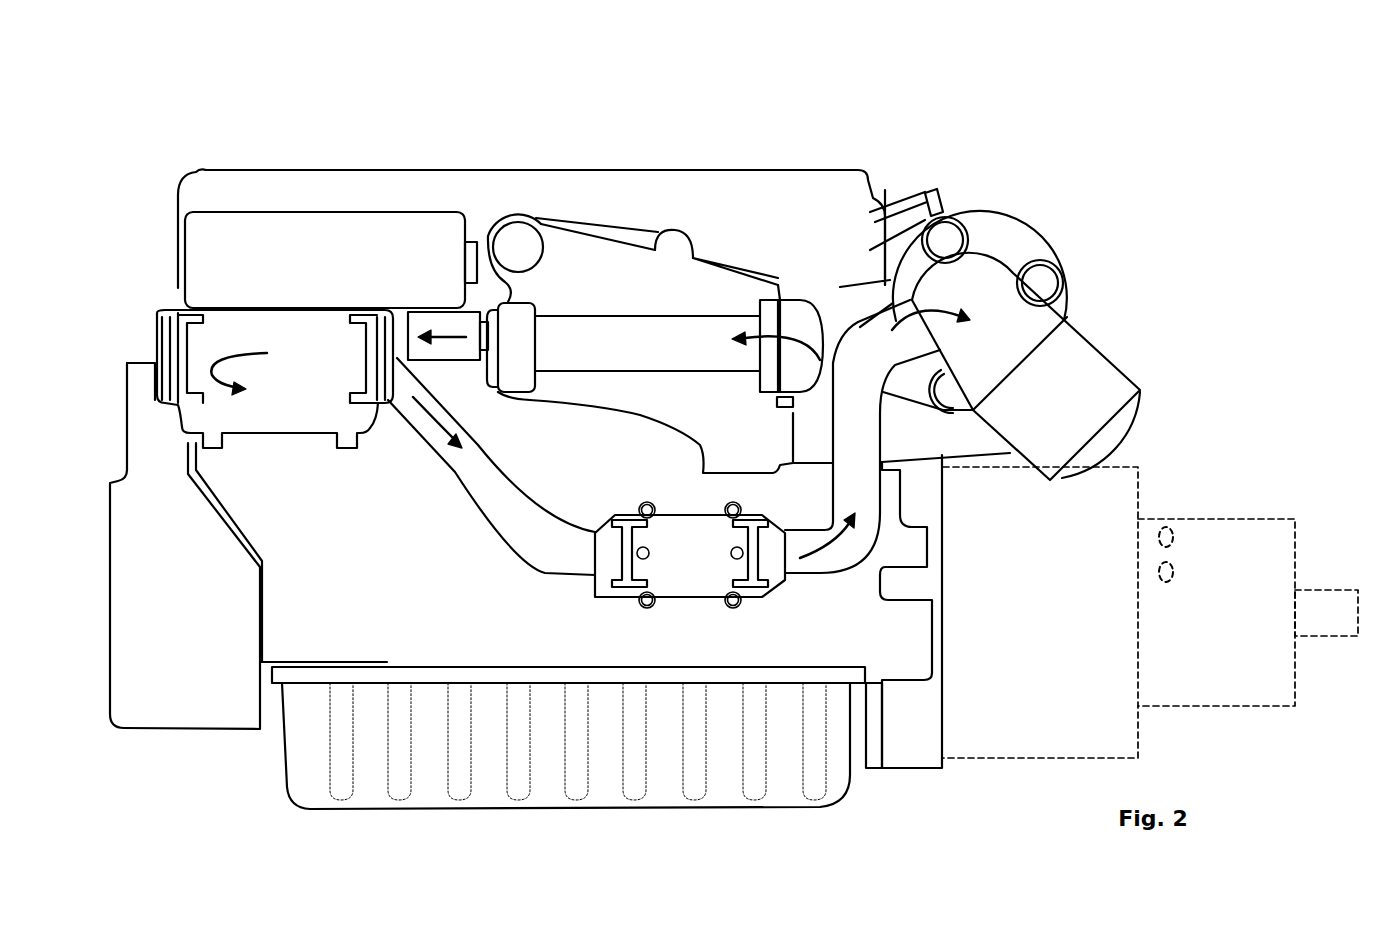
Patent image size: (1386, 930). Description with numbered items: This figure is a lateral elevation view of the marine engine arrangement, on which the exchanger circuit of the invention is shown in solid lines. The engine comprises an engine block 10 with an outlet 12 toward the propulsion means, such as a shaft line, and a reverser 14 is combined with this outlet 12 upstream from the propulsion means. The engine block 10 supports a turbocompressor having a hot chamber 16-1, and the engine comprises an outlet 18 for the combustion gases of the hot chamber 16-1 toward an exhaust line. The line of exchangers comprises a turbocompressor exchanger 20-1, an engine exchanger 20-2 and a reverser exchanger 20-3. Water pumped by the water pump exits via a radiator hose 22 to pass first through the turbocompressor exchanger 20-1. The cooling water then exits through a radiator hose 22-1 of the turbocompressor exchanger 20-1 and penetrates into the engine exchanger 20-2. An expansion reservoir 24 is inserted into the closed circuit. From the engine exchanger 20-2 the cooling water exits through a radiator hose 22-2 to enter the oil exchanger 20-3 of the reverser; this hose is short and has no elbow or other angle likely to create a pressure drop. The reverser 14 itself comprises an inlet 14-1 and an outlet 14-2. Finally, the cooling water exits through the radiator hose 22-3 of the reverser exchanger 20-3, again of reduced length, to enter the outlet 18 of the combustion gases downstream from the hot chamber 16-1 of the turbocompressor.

The engine block 10 is at (410, 636).
The outlet 12 is at (920, 745).
The reverser 14 is at (1243, 690).
The inlet 14-1 is at (1175, 537).
The outlet 14-2 is at (1175, 572).
The hot chamber 16-1 is at (1005, 238).
The outlet of the combustion gases 18 is at (1067, 423).
The turbocompressor exchanger 20-1 is at (645, 290).
The engine exchanger 20-2 is at (297, 347).
The reverser exchanger 20-3 is at (697, 567).
The radiator hose 22 is at (821, 320).
The radiator hose 22-1 is at (437, 327).
The radiator hose 22-2 is at (550, 557).
The radiator hose 22-3 is at (867, 507).
The expansion reservoir 24 is at (228, 255).